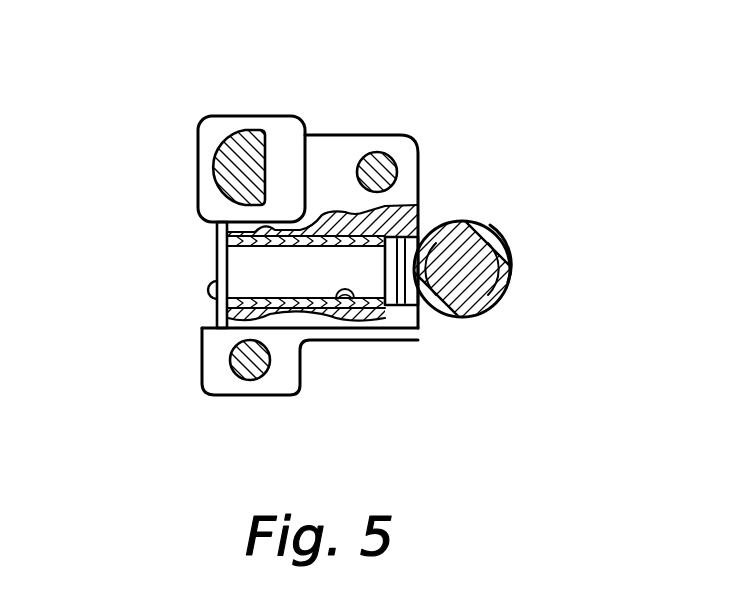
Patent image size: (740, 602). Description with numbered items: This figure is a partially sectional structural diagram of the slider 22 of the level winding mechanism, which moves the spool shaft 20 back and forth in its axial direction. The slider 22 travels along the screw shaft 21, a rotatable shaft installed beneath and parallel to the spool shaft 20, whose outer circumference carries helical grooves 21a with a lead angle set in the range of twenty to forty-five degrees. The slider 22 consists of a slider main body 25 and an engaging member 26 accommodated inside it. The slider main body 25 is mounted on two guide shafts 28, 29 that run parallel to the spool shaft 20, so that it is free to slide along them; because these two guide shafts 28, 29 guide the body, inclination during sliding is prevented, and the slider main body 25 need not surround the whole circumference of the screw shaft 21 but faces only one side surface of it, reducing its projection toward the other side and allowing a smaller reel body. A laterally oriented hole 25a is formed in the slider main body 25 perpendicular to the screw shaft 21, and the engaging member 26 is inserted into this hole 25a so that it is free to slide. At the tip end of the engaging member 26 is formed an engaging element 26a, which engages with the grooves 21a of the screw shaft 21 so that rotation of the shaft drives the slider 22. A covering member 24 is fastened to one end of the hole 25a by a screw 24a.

The spool shaft 20 is at (254, 143).
The screw shaft 21 is at (458, 226).
The helical grooves 21a is at (512, 272).
The slider 22 is at (200, 160).
The covering member 24 is at (215, 318).
The screw 24a is at (212, 290).
The slider main body 25 is at (380, 130).
The laterally oriented hole 25a is at (346, 300).
The engaging member 26 is at (352, 262).
The engaging element 26a is at (458, 308).
The guide shaft 28 is at (397, 157).
The guide shaft 29 is at (248, 363).